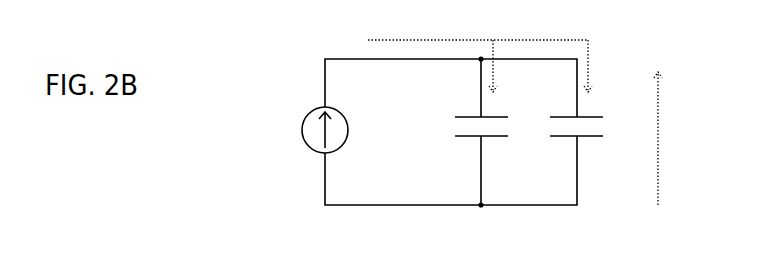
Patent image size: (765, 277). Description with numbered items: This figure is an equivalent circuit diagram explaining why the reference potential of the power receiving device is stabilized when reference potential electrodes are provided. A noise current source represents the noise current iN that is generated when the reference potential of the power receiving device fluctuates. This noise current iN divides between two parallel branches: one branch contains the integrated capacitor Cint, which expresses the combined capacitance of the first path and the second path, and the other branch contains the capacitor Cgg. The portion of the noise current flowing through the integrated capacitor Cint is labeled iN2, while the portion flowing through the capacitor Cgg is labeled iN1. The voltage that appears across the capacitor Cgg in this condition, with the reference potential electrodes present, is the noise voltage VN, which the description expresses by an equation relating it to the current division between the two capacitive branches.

The integrated capacitor Cint is at (468, 132).
The capacitor Cgg is at (592, 143).
The noise current iN is at (466, 33).
The noise current flowing through the capacitor Cgg iN1 is at (605, 74).
The noise current flowing through the integrated capacitor Cint iN2 is at (509, 74).
The voltage applied to the capacitor Cgg VN is at (678, 138).